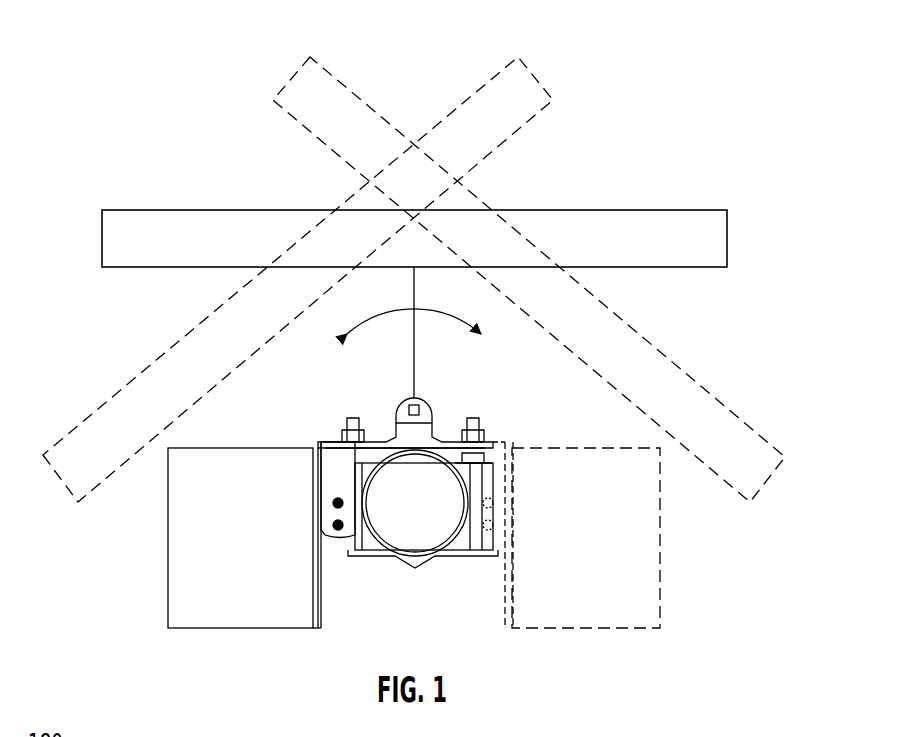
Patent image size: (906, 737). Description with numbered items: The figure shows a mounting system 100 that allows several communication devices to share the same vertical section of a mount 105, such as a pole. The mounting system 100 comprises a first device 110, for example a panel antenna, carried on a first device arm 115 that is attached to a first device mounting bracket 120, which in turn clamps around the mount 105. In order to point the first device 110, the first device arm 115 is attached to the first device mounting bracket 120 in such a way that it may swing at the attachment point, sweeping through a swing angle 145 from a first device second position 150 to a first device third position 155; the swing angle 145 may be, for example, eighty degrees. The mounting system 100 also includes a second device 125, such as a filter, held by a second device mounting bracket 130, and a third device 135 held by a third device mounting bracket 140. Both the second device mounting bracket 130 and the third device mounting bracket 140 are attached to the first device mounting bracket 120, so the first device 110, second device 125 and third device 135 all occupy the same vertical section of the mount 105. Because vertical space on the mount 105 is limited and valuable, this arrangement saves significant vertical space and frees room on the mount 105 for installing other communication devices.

The mounting system 100 is at (112, 89).
The mount 105 is at (392, 532).
The first device 110 is at (136, 210).
The first device arm 115 is at (420, 290).
The first device mounting bracket 120 is at (376, 406).
The second device 125 is at (198, 553).
The second device mounting bracket 130 is at (332, 560).
The third device 135 is at (618, 558).
The third device mounting bracket 140 is at (492, 562).
The swing angle 145 is at (382, 313).
The first device second position 150 is at (124, 392).
The first device third position 155 is at (737, 417).